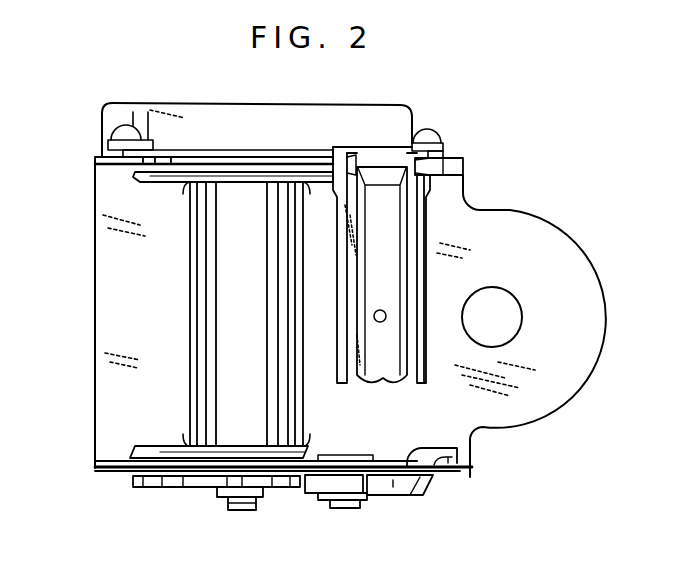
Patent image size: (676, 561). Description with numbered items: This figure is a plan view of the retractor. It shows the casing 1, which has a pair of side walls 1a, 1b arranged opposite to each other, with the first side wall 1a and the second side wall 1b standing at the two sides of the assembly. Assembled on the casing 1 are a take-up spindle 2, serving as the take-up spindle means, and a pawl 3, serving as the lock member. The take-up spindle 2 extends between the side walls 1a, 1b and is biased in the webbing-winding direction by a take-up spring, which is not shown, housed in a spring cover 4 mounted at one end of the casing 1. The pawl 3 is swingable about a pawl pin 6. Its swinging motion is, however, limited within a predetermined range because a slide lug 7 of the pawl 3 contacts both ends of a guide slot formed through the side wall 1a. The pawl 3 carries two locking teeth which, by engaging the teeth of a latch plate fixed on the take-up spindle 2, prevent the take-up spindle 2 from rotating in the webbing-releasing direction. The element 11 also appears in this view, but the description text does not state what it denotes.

The casing 1 is at (508, 233).
The side wall 1a is at (95, 461).
The side wall 1b is at (97, 159).
The take-up spindle 2 is at (198, 307).
The pawl 3 is at (380, 488).
The spring cover 4 is at (325, 128).
The pawl pin 6 is at (345, 503).
The slide lug 7 is at (447, 478).
The nut 11 is at (238, 512).